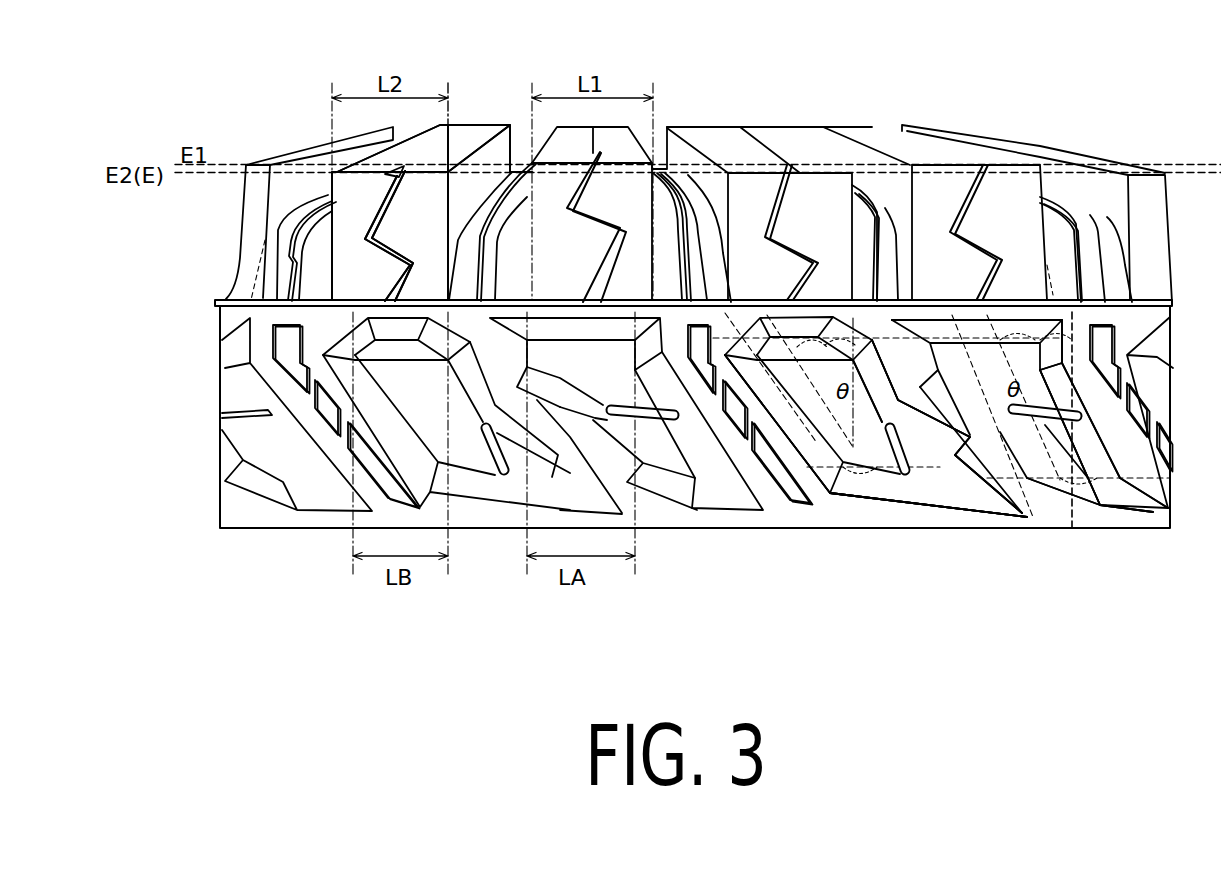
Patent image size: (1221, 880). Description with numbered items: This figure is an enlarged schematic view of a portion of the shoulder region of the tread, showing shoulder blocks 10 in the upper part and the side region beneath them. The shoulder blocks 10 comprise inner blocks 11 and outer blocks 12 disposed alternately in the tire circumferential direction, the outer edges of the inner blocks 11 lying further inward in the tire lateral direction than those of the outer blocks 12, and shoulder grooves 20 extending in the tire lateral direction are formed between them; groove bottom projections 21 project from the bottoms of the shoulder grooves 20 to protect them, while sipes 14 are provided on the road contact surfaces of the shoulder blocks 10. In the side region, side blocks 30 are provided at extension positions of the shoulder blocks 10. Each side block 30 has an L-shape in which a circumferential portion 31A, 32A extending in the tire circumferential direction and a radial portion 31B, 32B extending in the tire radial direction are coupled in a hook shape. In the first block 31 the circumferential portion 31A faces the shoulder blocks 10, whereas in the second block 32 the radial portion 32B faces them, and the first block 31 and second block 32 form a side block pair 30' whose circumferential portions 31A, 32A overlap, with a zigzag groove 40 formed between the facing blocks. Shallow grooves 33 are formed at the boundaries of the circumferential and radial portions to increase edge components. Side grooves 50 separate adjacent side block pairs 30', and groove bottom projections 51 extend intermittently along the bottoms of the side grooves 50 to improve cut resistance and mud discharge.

The shoulder block 10 is at (477, 128).
The inner block 11 is at (575, 128).
The outer block 12 is at (477, 128).
The sipe 14 is at (743, 140).
The shoulder groove 20 is at (660, 152).
The groove bottom projection 21 is at (293, 252).
The side block 30 is at (946, 470).
The side block pair 30' is at (939, 494).
The first block 31 is at (1107, 498).
The circumferential portion 31A is at (673, 448).
The radial portion 31B is at (710, 483).
The second block 32 is at (900, 474).
The circumferential portion 32A is at (470, 453).
The radial portion 32B is at (422, 388).
The shallow groove 33 is at (830, 493).
The zigzag groove 40 is at (928, 490).
The side groove 50 is at (812, 467).
The groove bottom projection 51 is at (777, 478).